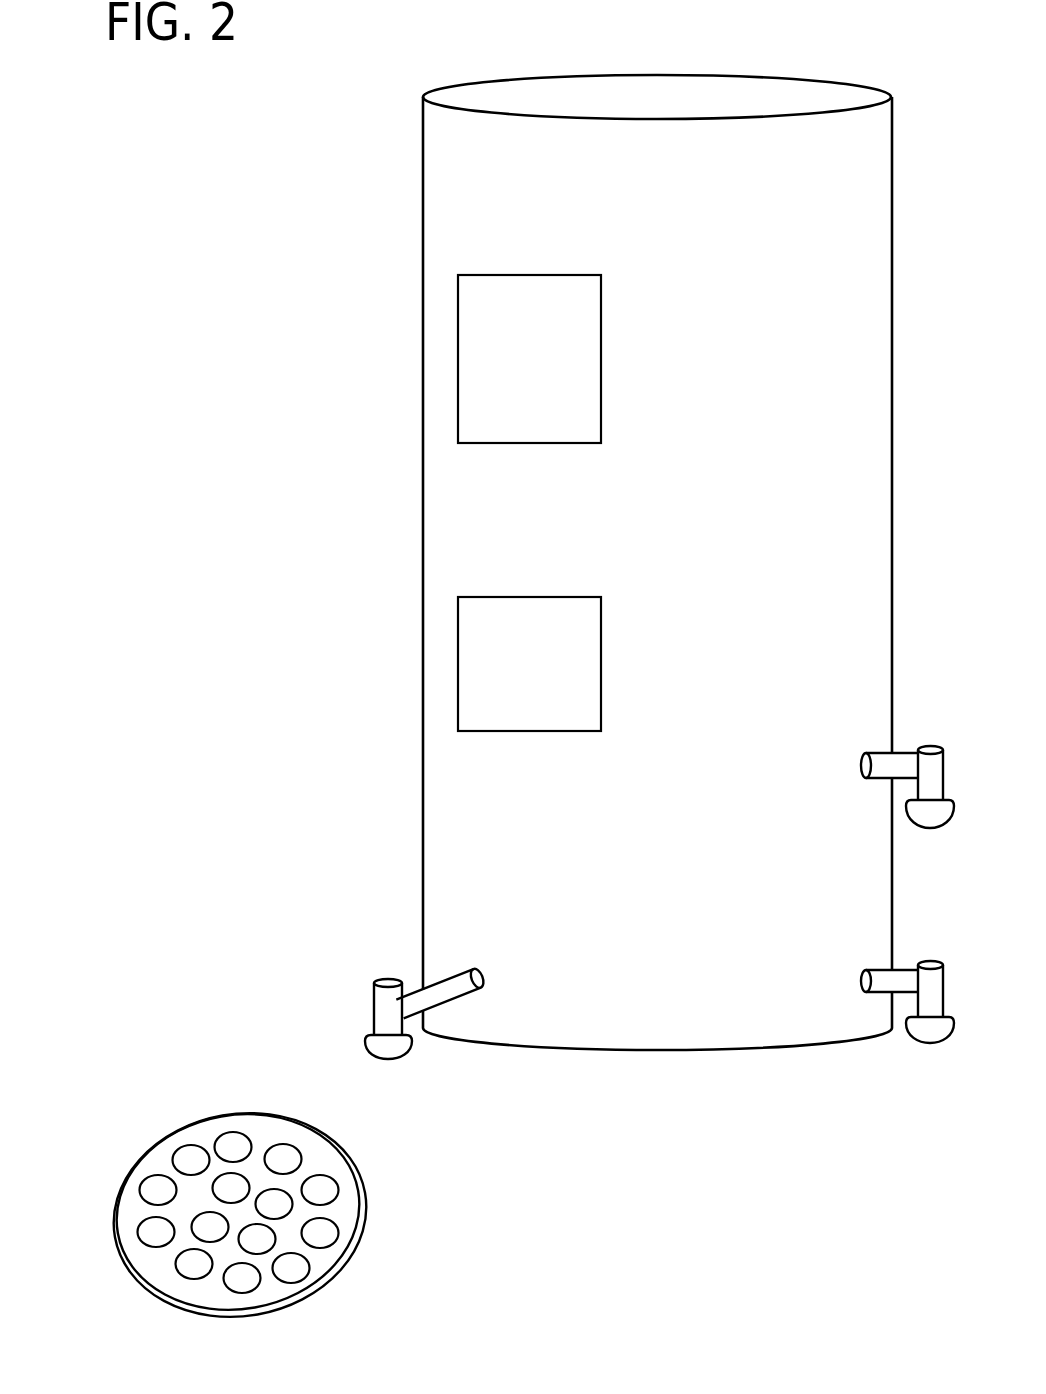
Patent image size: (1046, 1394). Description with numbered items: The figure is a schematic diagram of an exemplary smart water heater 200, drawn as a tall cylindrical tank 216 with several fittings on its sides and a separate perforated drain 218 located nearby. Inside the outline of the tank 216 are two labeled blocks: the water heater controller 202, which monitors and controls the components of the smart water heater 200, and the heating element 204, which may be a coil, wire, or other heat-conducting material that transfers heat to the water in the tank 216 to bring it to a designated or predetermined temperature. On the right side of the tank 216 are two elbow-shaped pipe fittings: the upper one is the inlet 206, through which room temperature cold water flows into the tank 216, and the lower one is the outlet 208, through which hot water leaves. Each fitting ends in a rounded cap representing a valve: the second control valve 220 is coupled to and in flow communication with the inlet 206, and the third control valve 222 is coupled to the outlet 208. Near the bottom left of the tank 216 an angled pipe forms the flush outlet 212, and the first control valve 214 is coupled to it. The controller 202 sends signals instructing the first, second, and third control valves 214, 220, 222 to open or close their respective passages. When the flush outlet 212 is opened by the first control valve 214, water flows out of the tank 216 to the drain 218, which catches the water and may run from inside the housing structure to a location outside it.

The smart water heater 200 is at (171, 124).
The water heater controller 202 is at (508, 427).
The heating element 204 is at (508, 712).
The inlet 206 is at (878, 753).
The outlet 208 is at (878, 970).
The flush outlet 212 is at (489, 974).
The first control valve 214 is at (403, 1043).
The tank 216 is at (795, 97).
The drain 218 is at (190, 1125).
The second control valve 220 is at (912, 812).
The third control valve 222 is at (912, 1034).